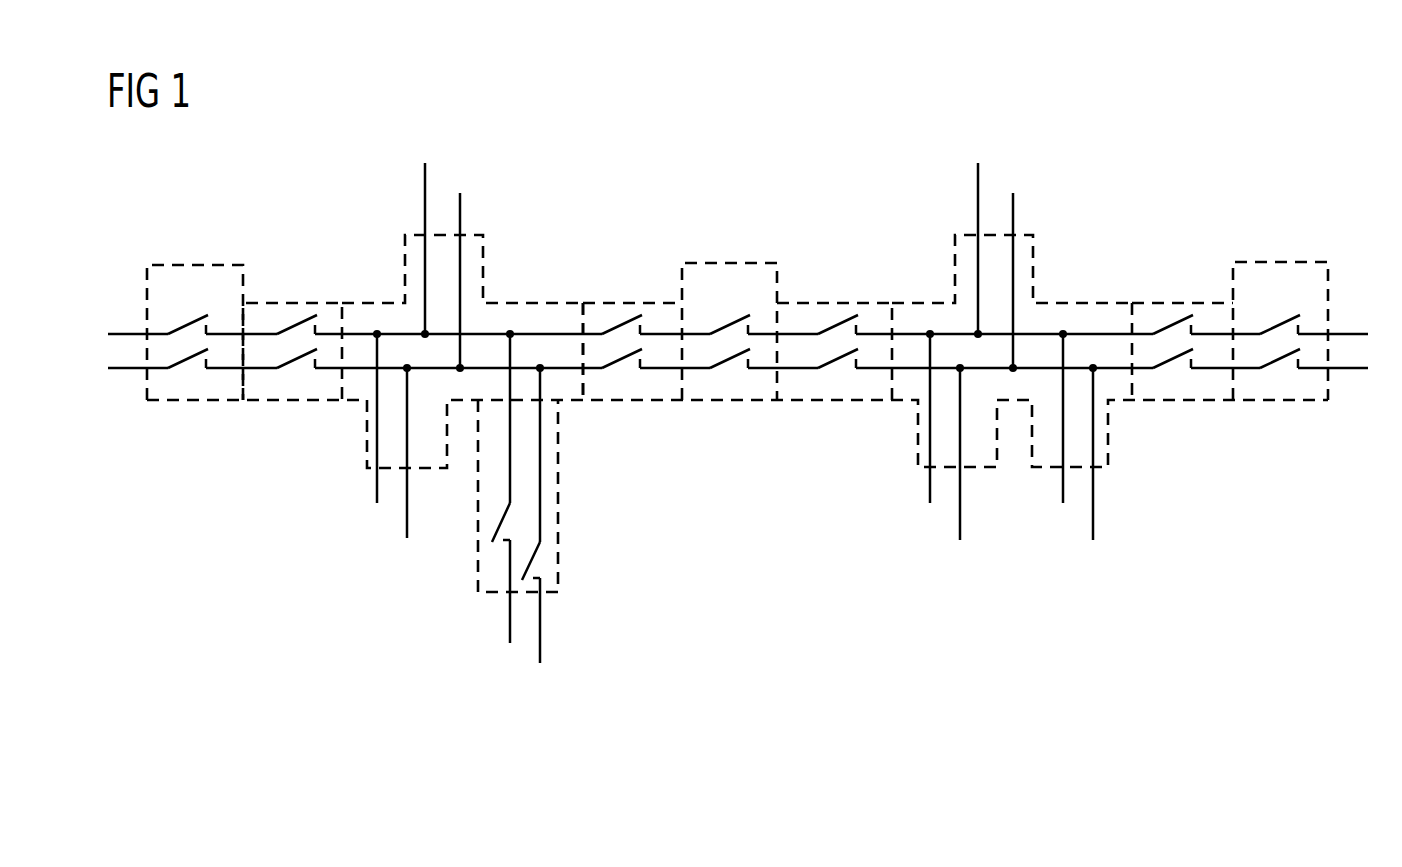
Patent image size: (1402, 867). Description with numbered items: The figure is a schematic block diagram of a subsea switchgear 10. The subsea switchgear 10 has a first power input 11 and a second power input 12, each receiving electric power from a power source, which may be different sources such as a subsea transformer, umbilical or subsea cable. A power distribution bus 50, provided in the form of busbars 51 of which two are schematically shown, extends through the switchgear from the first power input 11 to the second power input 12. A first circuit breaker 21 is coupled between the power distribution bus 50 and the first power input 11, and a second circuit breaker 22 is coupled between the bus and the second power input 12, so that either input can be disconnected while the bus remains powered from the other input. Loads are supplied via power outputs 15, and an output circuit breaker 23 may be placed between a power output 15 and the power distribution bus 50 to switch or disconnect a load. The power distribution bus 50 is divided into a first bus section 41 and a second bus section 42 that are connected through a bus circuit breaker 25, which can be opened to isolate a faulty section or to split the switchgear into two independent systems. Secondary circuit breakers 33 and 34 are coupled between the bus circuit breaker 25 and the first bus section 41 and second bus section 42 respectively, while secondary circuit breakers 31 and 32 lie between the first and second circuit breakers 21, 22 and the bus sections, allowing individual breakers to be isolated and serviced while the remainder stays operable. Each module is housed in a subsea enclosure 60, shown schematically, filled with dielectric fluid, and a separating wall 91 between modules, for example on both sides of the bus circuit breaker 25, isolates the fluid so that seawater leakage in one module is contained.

The subsea switchgear 10 is at (1224, 127).
The first power input 11 is at (127, 334).
The second power input 12 is at (1346, 334).
The power output 15 is at (440, 179).
The first circuit breaker 21 is at (198, 266).
The second circuit breaker 22 is at (1288, 266).
The output circuit breaker 23 is at (552, 493).
The bus circuit breaker 25 is at (735, 266).
The secondary circuit breaker 31 is at (288, 306).
The secondary circuit breaker 32 is at (1181, 306).
The secondary circuit breaker 33 is at (612, 306).
The secondary circuit breaker 34 is at (837, 306).
The first bus section 41 is at (517, 306).
The second bus section 42 is at (1091, 306).
The power distribution bus 50 is at (357, 368).
The busbars 51 is at (912, 368).
The subsea enclosure 60 is at (648, 401).
The separating wall 91 is at (585, 401).